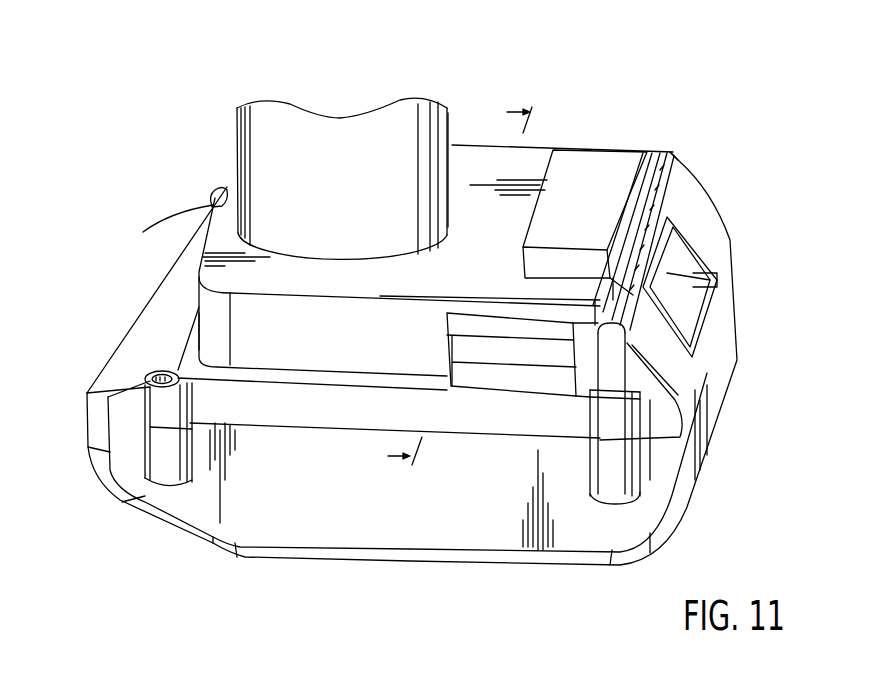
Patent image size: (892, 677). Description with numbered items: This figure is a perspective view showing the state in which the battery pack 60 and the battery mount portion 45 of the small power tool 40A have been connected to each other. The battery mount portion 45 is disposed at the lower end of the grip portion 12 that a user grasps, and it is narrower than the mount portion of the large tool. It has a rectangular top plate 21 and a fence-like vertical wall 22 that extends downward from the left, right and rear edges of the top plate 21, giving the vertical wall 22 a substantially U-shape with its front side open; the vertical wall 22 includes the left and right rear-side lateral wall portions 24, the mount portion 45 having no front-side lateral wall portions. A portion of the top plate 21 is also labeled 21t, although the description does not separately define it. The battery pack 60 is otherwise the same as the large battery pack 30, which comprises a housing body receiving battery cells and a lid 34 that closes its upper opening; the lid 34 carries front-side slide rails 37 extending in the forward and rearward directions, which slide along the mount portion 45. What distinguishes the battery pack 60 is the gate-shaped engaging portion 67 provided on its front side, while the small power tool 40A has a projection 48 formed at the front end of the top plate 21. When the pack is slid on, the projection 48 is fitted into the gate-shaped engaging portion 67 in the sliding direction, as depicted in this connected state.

The grip portion 12 is at (322, 170).
The top plate 21 is at (223, 252).
The projection of base block 21t is at (587, 197).
The vertical wall 22 is at (190, 301).
The rear-side lateral wall portions 24 is at (280, 333).
The battery pack 30 is at (748, 308).
The lid 34 is at (707, 237).
The front-side slide rails 37 is at (495, 377).
The small power tool 40A is at (530, 88).
The battery mount portion 45 is at (460, 142).
The projection 48 is at (653, 215).
The battery pack 60 is at (655, 118).
The gate-shaped engaging portion 67 is at (643, 197).